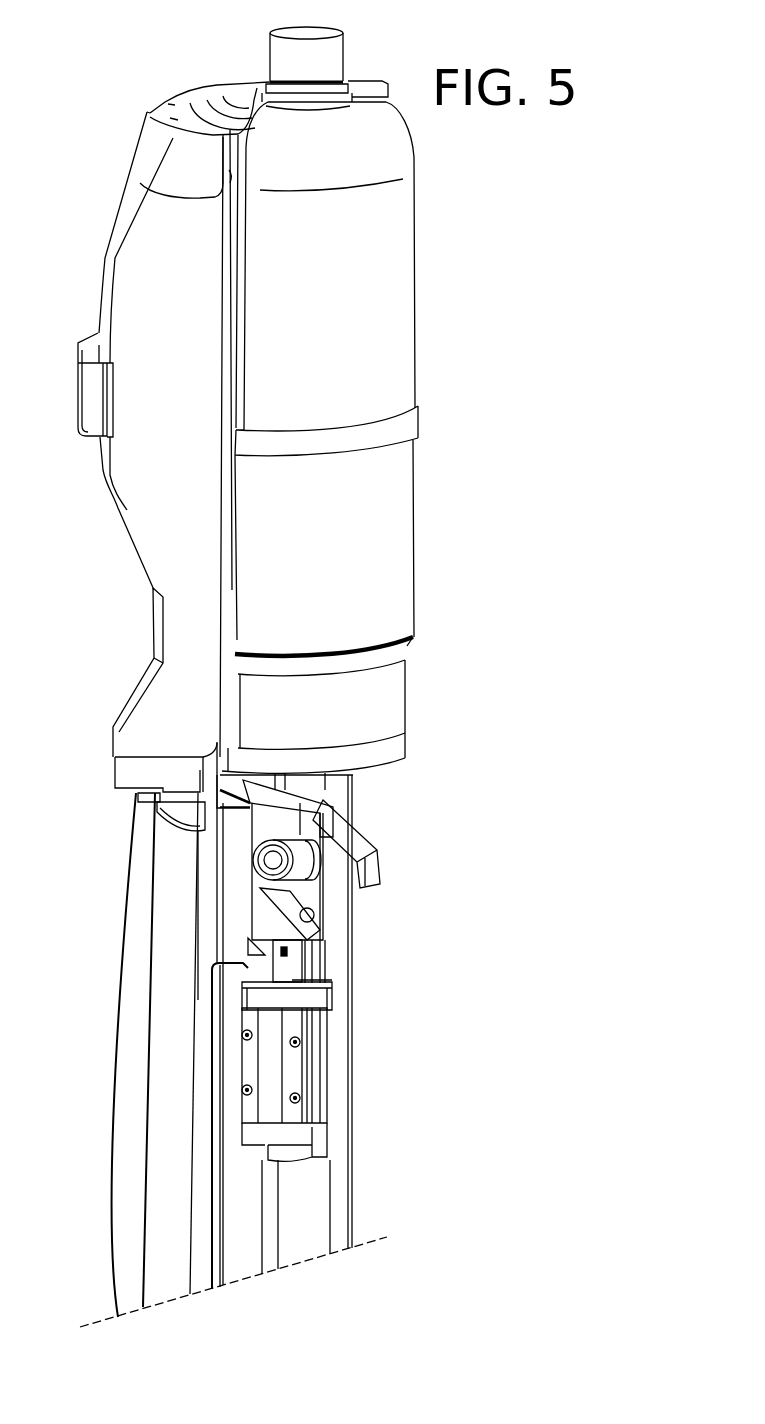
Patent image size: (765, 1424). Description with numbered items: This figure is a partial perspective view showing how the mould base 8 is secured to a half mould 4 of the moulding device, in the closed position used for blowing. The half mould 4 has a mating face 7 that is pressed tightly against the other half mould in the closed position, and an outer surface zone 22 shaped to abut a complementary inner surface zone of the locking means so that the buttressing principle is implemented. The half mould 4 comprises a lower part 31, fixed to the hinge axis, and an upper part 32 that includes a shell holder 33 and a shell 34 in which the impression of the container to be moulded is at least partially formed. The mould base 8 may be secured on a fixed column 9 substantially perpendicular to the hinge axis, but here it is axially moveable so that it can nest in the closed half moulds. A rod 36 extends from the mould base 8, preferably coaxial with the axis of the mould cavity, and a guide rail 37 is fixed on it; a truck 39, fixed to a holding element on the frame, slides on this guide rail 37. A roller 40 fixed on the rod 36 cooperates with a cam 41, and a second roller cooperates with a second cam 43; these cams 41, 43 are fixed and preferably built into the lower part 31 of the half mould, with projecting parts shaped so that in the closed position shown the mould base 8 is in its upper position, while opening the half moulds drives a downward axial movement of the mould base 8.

The half mould 4 is at (133, 283).
The mating face 7 is at (168, 190).
The mould base 8 is at (400, 578).
The fixed column 9 is at (310, 1233).
The outer surface zone 22 is at (93, 390).
The lower part 31 is at (170, 1145).
The upper part 32 is at (145, 512).
The shell holder 33 is at (152, 143).
The shell 34 is at (255, 122).
The rod 36 is at (340, 987).
The guide rail 37 is at (290, 970).
The truck 39 is at (292, 1070).
The roller 40 is at (333, 843).
The cam 41 is at (307, 932).
The cam 43 is at (357, 867).